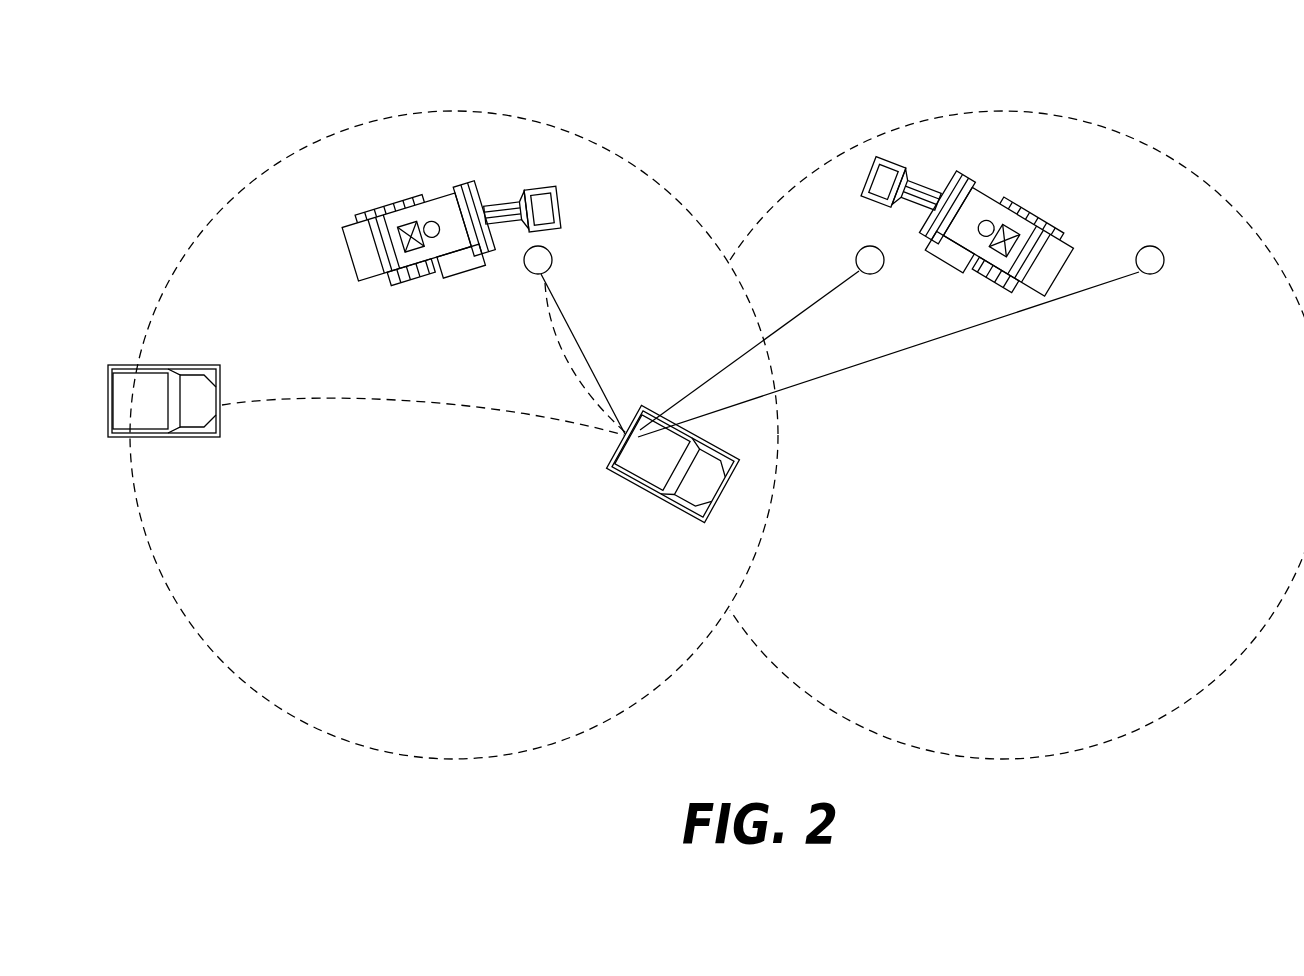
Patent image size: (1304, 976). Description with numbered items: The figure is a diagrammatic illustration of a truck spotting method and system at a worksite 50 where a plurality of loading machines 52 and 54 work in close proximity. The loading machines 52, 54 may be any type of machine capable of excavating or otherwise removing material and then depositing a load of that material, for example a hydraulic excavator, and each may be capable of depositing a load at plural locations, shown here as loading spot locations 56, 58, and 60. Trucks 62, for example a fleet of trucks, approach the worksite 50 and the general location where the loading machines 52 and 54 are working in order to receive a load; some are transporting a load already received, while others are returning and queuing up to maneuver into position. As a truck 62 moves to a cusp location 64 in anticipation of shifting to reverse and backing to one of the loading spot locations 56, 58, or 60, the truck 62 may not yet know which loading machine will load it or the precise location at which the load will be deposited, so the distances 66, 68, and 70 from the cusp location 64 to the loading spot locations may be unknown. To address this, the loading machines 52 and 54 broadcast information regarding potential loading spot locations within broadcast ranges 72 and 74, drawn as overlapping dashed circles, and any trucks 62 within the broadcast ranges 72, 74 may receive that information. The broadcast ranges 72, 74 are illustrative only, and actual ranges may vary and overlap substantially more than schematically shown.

The worksite 50 is at (850, 66).
The loading machine 52 is at (470, 180).
The loading machine 54 is at (1020, 186).
The loading spot location 56 is at (553, 258).
The loading spot location 58 is at (856, 258).
The loading spot location 60 is at (1164, 262).
The truck 62 is at (183, 366).
The cusp location 64 is at (628, 432).
The distance 66 is at (583, 352).
The distance 68 is at (800, 311).
The distance 70 is at (920, 347).
The broadcast range 72 is at (1197, 180).
The broadcast range 74 is at (275, 168).